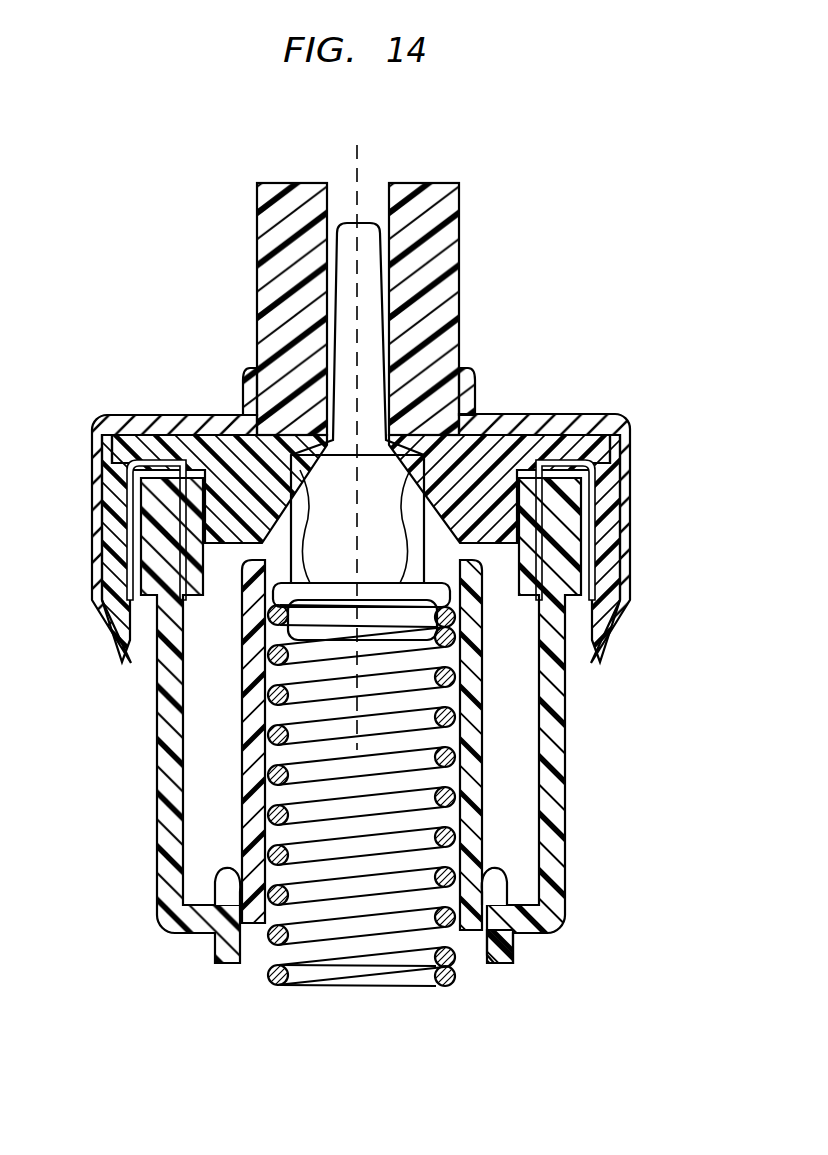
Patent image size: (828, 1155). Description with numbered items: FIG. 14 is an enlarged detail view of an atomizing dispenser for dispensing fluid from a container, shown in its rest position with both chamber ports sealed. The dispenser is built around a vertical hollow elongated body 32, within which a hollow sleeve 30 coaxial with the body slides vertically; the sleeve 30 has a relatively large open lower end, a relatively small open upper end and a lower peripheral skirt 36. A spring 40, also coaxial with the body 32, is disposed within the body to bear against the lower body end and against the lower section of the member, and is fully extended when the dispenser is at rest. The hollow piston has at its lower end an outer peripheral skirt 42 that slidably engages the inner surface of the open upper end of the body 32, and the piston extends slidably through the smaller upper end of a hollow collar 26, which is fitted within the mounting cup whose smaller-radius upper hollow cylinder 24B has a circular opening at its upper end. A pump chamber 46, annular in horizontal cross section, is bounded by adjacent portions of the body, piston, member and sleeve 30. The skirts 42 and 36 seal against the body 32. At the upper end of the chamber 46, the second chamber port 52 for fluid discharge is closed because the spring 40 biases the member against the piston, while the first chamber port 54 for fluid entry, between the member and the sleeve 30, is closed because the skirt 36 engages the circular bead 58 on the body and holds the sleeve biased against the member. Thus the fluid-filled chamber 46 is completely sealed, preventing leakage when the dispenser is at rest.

The upper hollow cylinder 24B is at (632, 480).
The hollow collar 26 is at (625, 560).
The vertical hollow elongated body 32 is at (165, 725).
The pump chamber 46 is at (525, 702).
The outer peripheral skirt 42 is at (537, 613).
The circular ring shaped groove 58 is at (478, 904).
The lower peripheral skirt 36 is at (478, 940).
The second chamber port 52 is at (398, 468).
The first chamber port 54 is at (394, 640).
The hollow sleeve 30 is at (283, 832).
The spring 40 is at (432, 858).